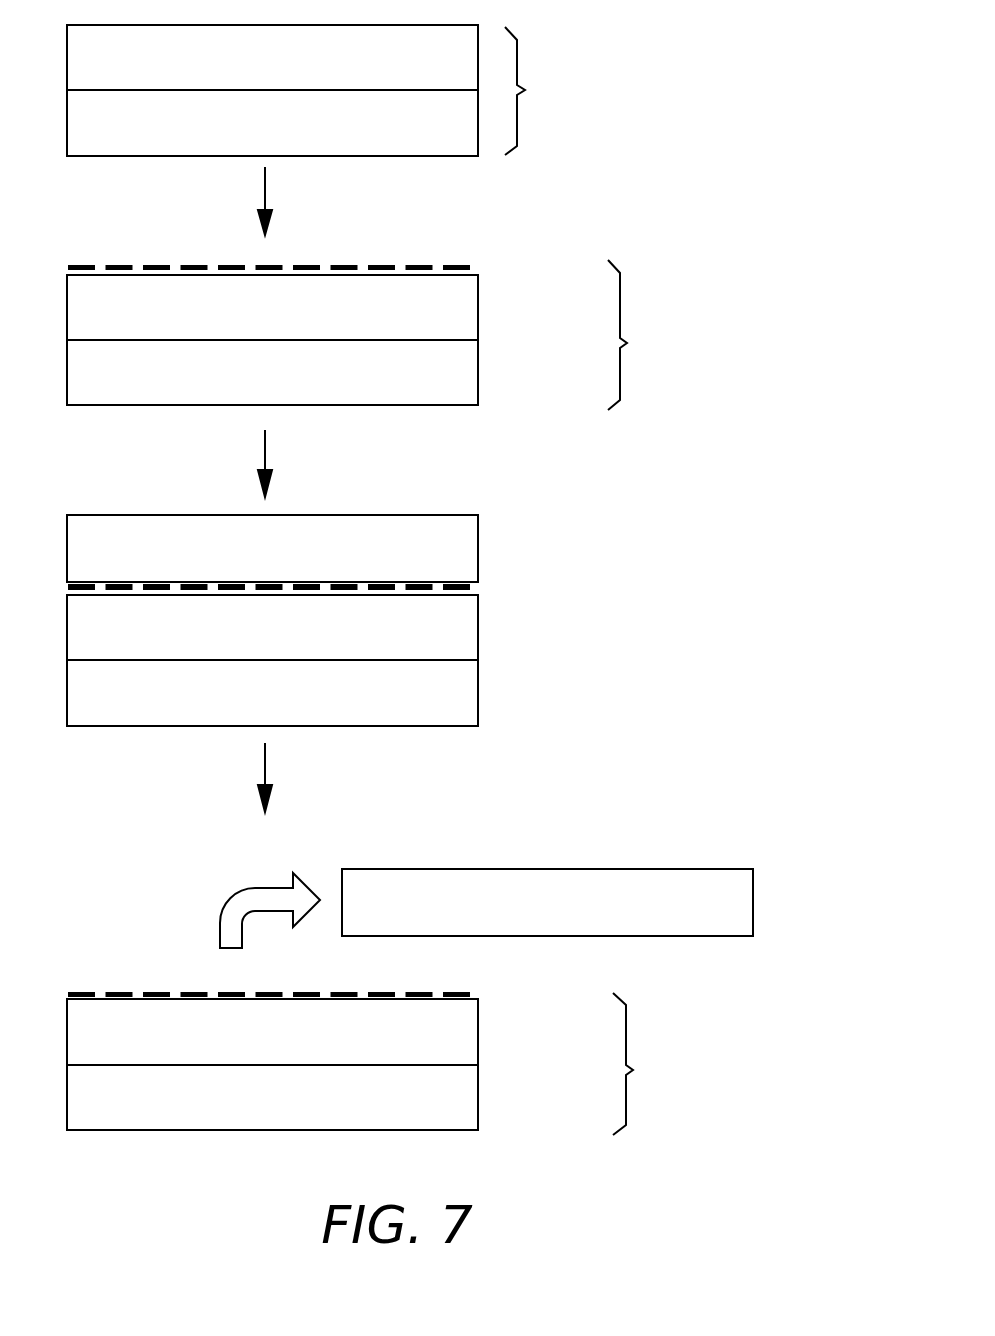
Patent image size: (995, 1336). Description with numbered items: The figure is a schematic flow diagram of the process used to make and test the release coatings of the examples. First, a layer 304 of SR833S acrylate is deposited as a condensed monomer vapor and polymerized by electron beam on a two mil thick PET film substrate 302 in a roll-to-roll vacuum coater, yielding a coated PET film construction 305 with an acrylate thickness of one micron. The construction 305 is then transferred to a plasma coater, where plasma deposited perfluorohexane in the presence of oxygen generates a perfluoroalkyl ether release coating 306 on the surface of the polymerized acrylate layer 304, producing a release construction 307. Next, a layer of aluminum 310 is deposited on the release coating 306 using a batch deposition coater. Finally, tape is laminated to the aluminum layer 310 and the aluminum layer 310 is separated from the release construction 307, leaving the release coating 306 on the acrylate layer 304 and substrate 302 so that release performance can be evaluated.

The PET film substrate 302 is at (241, 138).
The layer of SR833S 304 is at (241, 71).
The construction 305 is at (542, 91).
The perfluoroalkyl ether release coating 306 is at (470, 266).
The release construction 307 is at (648, 697).
The layer of aluminum 310 is at (241, 557).